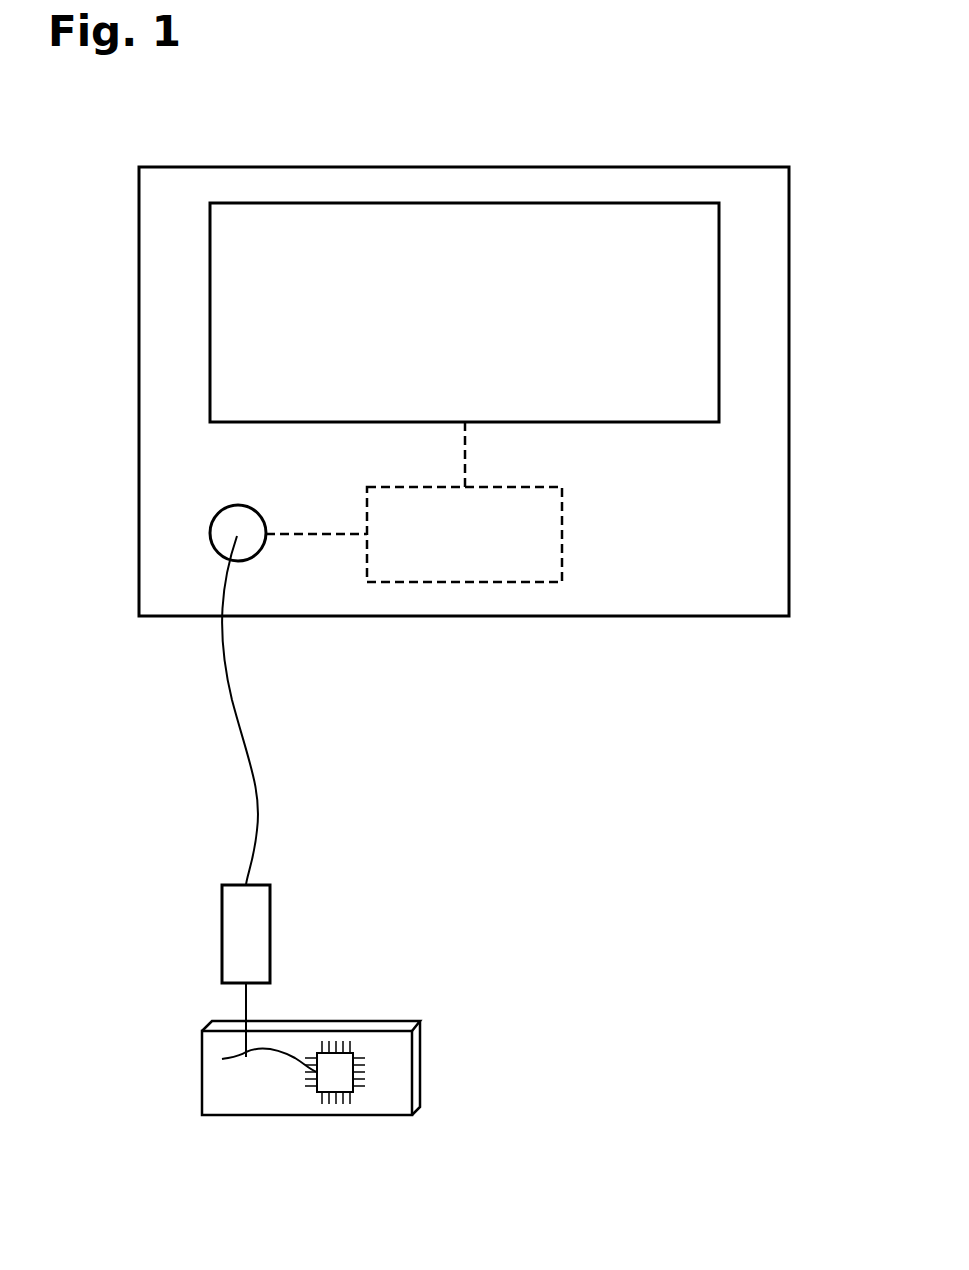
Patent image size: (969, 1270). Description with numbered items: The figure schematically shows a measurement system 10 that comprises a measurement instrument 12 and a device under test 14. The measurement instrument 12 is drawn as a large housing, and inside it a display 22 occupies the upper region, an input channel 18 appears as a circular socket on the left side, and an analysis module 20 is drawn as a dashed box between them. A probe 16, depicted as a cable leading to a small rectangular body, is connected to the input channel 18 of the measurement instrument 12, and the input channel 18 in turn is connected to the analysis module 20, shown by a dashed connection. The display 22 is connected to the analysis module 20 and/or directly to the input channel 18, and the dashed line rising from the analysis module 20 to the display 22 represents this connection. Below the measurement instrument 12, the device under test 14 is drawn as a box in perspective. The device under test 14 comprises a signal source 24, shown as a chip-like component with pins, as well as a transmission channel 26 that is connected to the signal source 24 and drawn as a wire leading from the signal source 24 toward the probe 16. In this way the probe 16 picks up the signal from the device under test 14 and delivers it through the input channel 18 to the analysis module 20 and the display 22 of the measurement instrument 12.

The measurement system 10 is at (666, 128).
The measurement instrument 12 is at (100, 389).
The device under test 14 is at (373, 1004).
The probe 16 is at (222, 945).
The input channel 18 is at (210, 537).
The analysis module 20 is at (463, 582).
The display 22 is at (210, 275).
The signal source 24 is at (337, 1083).
The transmission channel 26 is at (288, 1064).